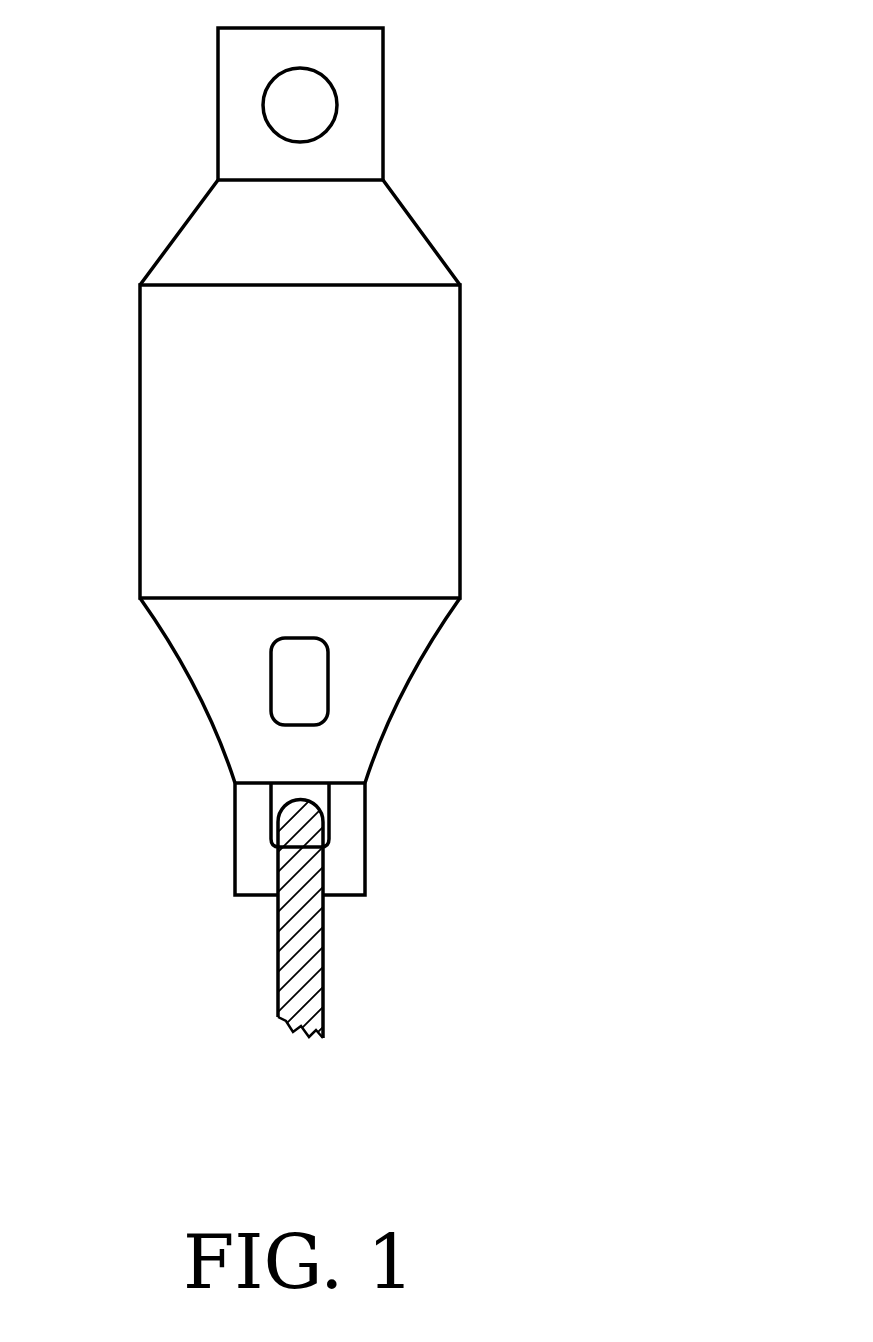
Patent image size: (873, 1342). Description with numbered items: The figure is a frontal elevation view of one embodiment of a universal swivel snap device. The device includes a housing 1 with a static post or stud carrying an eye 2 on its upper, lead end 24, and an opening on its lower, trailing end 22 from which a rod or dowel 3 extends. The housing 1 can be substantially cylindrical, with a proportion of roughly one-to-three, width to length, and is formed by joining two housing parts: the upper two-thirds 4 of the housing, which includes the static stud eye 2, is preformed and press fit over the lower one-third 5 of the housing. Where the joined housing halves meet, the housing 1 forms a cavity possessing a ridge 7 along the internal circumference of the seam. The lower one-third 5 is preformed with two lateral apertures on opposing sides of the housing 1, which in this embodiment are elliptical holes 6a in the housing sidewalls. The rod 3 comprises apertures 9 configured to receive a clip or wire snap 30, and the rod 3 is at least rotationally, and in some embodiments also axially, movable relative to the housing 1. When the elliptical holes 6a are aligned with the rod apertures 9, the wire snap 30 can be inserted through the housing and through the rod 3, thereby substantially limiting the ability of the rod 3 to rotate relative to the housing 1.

The housing 1 is at (114, 305).
The eye 2 is at (265, 73).
The upper end 24 is at (386, 178).
The upper two-thirds of the housing 4 is at (508, 182).
The ridge 7 is at (139, 596).
The lower one-third of the housing 5 is at (508, 602).
The elliptical holes 6a is at (287, 690).
The lower end 22 is at (234, 786).
The apertures 9 is at (318, 792).
The rod 3 is at (246, 866).
The wire snap 30 is at (323, 987).